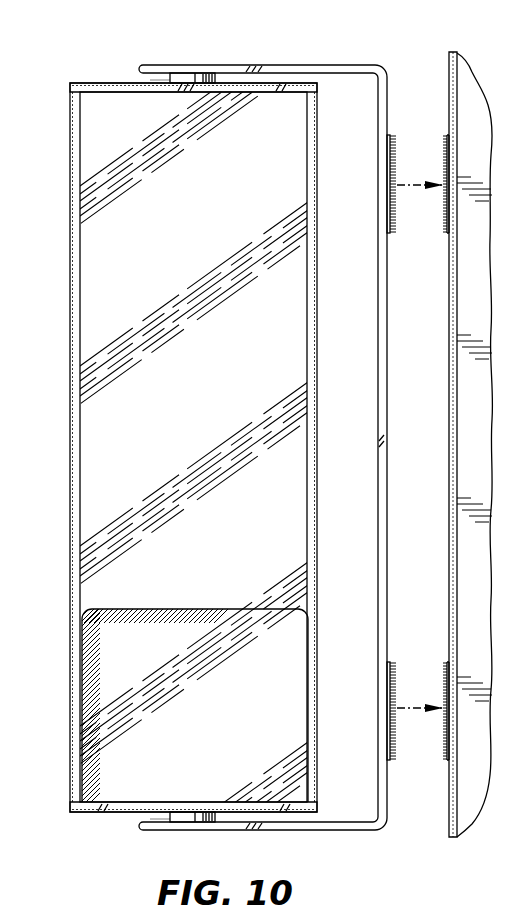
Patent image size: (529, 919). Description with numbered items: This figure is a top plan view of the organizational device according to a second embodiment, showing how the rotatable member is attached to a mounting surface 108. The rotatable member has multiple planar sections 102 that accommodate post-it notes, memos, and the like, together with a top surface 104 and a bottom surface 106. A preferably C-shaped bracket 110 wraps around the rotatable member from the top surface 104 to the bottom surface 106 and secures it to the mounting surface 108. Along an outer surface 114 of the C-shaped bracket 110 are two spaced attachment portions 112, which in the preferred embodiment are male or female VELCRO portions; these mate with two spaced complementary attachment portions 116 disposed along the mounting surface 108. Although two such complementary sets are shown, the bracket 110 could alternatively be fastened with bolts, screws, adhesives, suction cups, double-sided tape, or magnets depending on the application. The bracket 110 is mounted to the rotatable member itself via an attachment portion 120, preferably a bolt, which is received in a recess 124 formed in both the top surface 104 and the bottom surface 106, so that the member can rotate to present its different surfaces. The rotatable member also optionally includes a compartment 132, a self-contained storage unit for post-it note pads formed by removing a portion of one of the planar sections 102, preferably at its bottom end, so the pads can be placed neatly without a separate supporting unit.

The planar section 102 is at (100, 264).
The top surface 104 is at (93, 82).
The bottom surface 106 is at (104, 806).
The mounting surface 108 is at (450, 108).
The bracket 110 is at (285, 64).
The attachment portions 112 is at (396, 208).
The outer surface 114 is at (387, 437).
The attachment portions 116 is at (445, 165).
The attachment portion 120 is at (170, 80).
The recess 124 is at (215, 77).
The compartment 132 is at (155, 704).